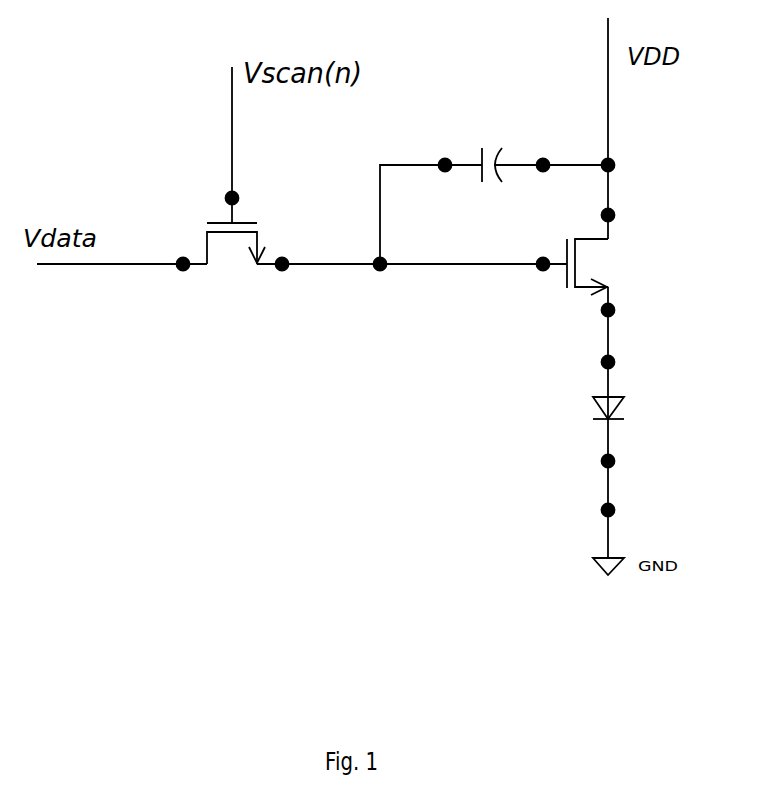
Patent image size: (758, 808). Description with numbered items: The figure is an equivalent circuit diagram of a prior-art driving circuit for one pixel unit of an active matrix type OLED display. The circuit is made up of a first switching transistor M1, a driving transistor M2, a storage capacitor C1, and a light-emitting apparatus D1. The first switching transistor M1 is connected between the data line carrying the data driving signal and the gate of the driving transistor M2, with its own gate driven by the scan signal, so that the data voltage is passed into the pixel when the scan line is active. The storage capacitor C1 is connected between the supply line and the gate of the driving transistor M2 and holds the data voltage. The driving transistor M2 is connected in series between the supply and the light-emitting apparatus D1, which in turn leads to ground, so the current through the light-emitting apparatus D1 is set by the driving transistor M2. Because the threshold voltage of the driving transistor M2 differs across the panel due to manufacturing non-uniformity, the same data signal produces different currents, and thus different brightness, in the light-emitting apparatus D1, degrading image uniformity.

The first switching transistor M1 is at (236, 262).
The driving transistor M2 is at (609, 267).
The storage capacitor C1 is at (477, 148).
The light-emitting apparatus D1 is at (631, 406).